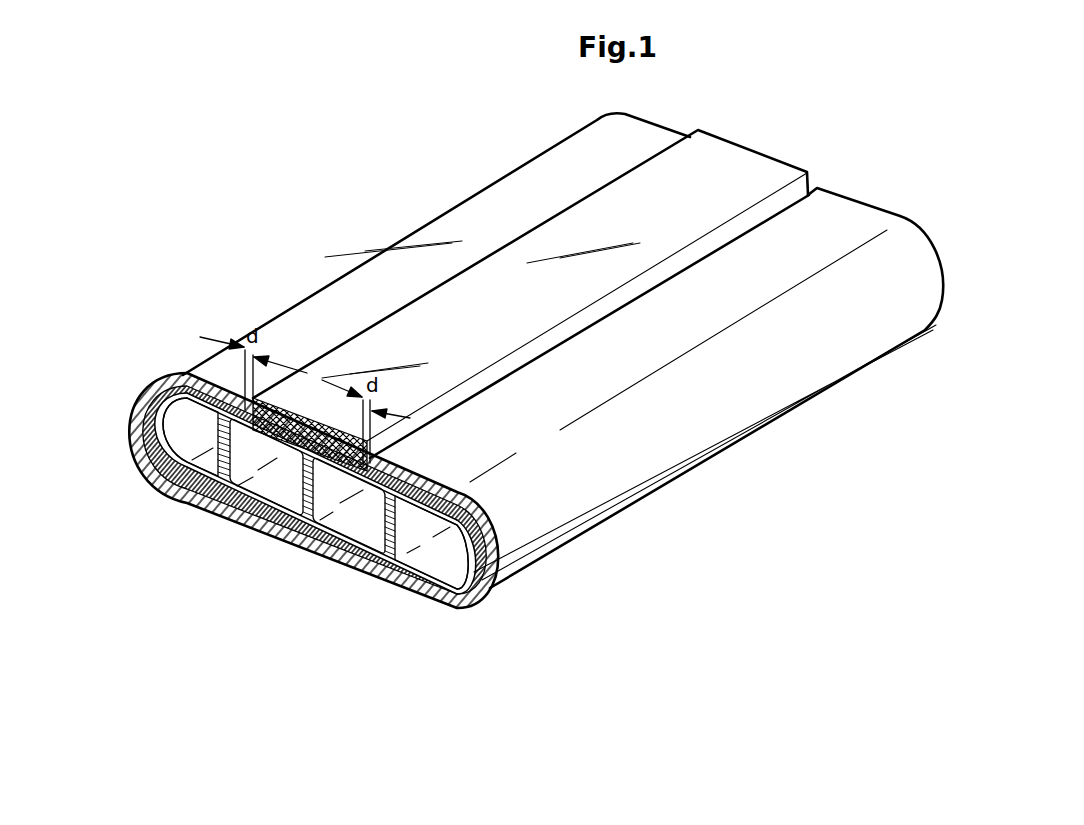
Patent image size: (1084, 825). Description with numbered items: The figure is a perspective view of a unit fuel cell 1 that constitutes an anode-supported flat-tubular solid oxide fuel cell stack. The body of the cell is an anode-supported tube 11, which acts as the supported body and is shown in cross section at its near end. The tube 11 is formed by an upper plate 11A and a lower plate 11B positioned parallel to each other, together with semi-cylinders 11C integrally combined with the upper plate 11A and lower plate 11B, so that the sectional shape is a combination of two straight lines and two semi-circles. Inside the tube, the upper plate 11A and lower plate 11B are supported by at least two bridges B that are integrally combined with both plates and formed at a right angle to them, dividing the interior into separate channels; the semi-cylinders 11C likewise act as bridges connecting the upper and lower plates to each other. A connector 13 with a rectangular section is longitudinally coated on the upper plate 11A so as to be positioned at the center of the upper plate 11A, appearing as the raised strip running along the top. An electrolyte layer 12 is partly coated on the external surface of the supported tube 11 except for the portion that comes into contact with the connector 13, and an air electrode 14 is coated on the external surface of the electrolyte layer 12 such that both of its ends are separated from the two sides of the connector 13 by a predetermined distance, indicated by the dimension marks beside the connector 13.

The unit fuel cell 1 is at (757, 522).
The anode-supported tube 11 is at (349, 547).
The upper plate 11A is at (172, 392).
The lower plate 11B is at (245, 512).
The semi-cylinders 11C is at (132, 432).
The electrolyte layer 12 is at (443, 600).
The connector 13 is at (393, 317).
The air electrode 14 is at (292, 553).
The bridges B is at (212, 472).